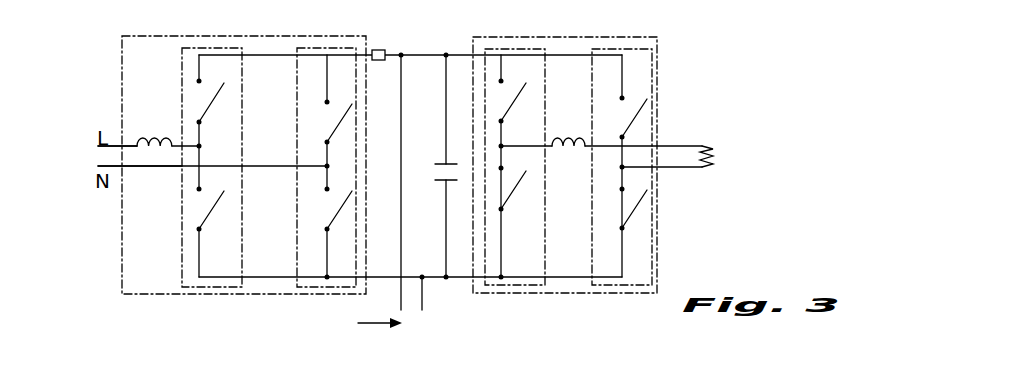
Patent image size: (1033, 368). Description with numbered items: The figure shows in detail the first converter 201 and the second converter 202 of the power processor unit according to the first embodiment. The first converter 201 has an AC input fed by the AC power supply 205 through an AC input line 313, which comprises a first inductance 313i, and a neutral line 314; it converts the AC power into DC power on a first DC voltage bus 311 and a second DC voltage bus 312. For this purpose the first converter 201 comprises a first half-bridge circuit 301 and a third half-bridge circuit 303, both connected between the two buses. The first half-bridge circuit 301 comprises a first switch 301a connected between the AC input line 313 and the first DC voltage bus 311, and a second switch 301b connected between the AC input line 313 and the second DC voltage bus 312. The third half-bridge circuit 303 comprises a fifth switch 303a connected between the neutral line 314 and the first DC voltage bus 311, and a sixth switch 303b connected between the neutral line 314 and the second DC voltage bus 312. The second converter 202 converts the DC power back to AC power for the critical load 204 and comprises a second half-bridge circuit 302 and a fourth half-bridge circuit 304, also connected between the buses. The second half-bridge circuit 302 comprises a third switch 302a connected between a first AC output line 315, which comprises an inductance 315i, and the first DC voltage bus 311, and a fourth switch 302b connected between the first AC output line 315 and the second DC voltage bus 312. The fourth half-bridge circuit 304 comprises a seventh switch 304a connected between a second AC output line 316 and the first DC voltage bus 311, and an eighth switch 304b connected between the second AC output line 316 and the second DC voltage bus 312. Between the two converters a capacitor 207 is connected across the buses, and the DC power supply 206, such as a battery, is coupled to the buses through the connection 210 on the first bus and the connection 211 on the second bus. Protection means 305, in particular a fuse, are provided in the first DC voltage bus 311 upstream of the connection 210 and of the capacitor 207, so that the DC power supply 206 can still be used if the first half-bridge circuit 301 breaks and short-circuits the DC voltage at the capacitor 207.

The first converter 201 is at (120, 232).
The second converter 202 is at (658, 72).
The critical load 204 is at (710, 153).
The AC power supply 205 is at (98, 157).
The DC power supply 206 is at (399, 325).
The capacitor 207 is at (445, 160).
The connection 210 is at (402, 48).
The connection 211 is at (423, 279).
The first half-bridge circuit 301 is at (204, 143).
The first switch 301a is at (210, 107).
The second switch 301b is at (207, 215).
The second half-bridge circuit 302 is at (509, 146).
The third switch 302a is at (509, 100).
The fourth switch 302b is at (512, 198).
The third half-bridge circuit 303 is at (334, 147).
The fifth switch 303a is at (338, 119).
The sixth switch 303b is at (335, 215).
The fourth half-bridge circuit 304 is at (665, 146).
The seventh switch 304a is at (630, 125).
The eighth switch 304b is at (635, 210).
The protection means 305 is at (378, 48).
The first DC voltage bus 311 is at (258, 50).
The second DC voltage bus 312 is at (270, 278).
The AC input line 313 is at (137, 146).
The first inductance 313i is at (157, 138).
The neutral line 314 is at (153, 167).
The first AC output line 315 is at (605, 146).
The inductance 315i is at (558, 140).
The second AC output line 316 is at (688, 168).